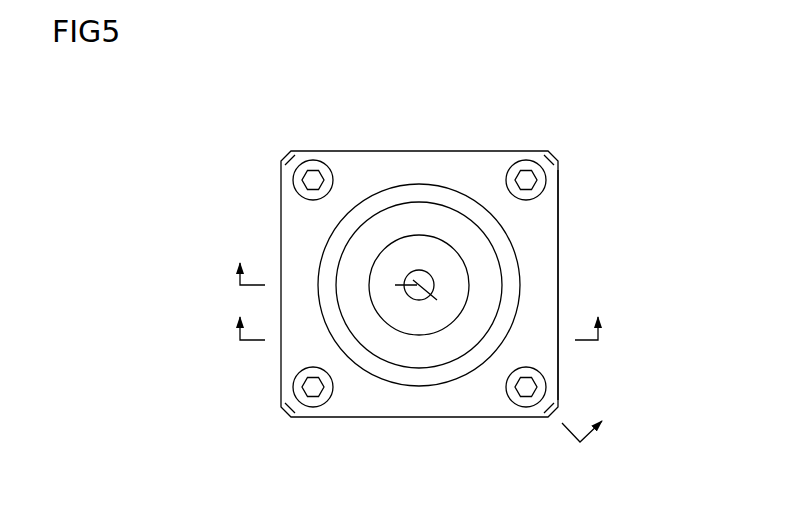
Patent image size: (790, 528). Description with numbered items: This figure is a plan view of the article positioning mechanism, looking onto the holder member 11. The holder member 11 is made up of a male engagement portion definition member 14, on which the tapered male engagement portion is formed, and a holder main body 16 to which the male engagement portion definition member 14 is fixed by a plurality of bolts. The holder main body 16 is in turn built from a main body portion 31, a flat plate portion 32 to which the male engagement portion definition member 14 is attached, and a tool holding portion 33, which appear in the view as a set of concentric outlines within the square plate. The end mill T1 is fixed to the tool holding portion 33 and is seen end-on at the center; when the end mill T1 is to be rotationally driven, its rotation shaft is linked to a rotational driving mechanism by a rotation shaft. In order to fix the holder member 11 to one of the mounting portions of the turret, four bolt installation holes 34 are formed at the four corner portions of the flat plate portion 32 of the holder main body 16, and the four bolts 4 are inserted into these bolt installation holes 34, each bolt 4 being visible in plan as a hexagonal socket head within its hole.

The bolt 4 is at (322, 162).
The holder member 11 is at (587, 163).
The male engagement portion definition member 14 is at (552, 152).
The holder main body 16 is at (561, 190).
The main body portion 31 is at (506, 250).
The flat plate portion 32 is at (547, 256).
The tool holding portion 33 is at (436, 247).
The bolt installation hole 34 is at (521, 160).
The end mill T1 is at (416, 269).